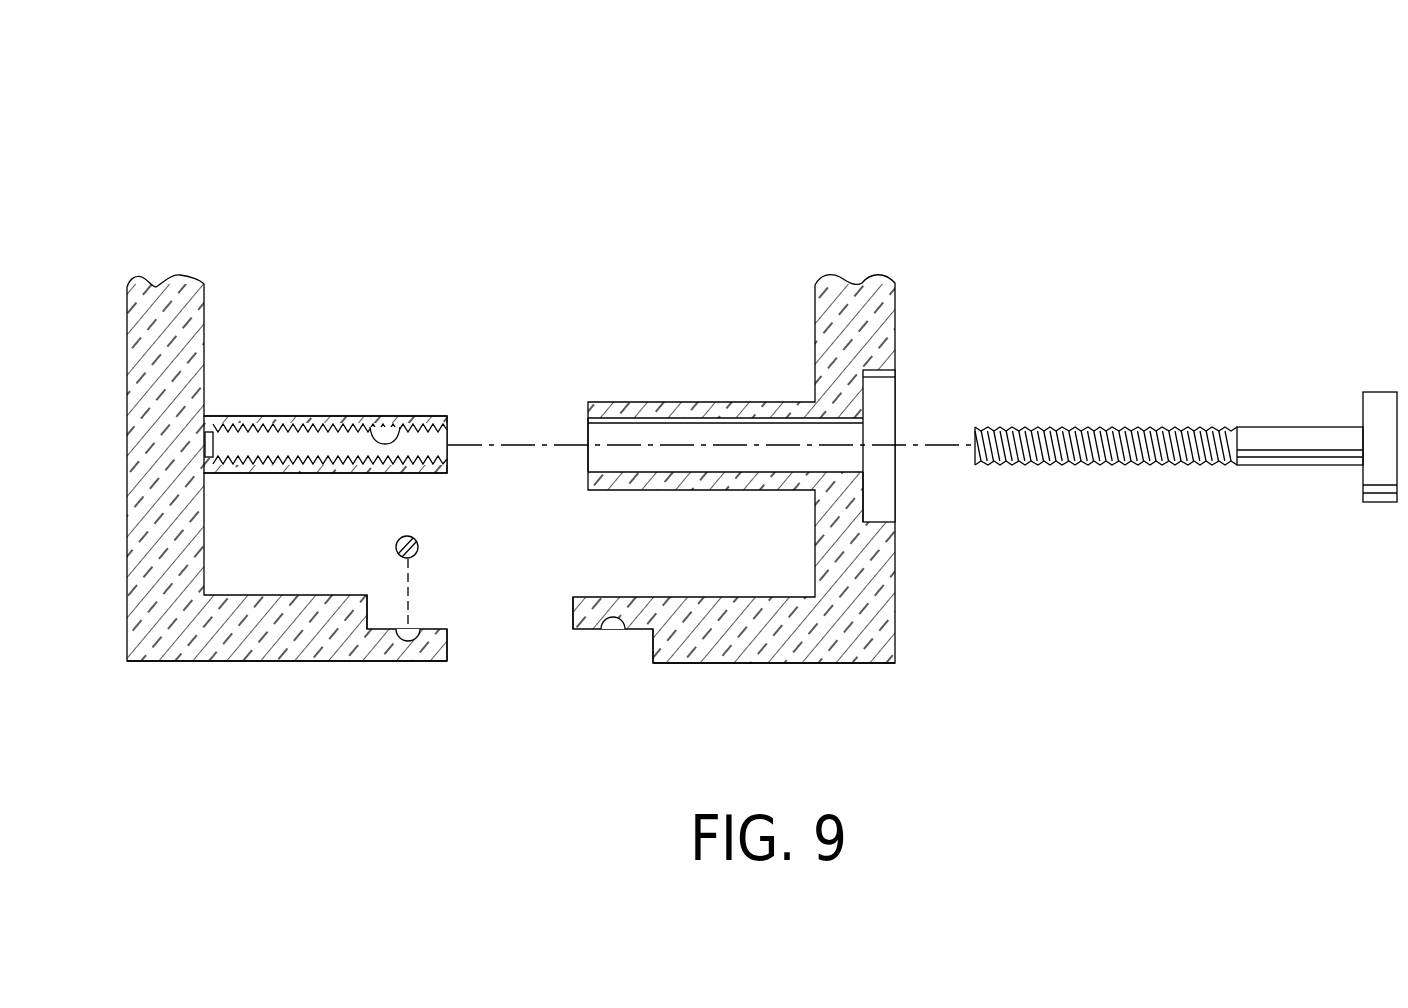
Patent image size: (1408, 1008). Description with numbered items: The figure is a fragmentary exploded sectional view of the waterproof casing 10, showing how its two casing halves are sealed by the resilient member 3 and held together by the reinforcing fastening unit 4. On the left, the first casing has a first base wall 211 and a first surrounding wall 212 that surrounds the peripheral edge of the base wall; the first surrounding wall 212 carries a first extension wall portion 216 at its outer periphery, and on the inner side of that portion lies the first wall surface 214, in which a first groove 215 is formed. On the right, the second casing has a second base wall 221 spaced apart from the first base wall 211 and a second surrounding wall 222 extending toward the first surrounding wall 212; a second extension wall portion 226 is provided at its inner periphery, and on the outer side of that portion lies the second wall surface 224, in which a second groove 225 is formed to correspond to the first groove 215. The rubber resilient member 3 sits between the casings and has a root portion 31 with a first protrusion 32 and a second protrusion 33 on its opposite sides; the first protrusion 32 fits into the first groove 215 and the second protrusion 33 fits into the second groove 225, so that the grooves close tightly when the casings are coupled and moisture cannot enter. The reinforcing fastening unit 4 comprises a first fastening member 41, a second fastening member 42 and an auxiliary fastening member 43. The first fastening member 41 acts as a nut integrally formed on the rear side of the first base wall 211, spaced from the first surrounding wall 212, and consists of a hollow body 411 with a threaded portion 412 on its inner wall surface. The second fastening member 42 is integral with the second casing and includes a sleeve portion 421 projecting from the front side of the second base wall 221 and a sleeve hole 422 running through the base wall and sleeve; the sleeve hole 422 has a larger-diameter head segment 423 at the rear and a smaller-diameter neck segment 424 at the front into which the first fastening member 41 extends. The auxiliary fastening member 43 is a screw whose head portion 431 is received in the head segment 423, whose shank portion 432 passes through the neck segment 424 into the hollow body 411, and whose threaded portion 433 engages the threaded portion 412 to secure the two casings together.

The waterproof casing 10 is at (258, 392).
The reinforcing fastening unit 4 is at (800, 438).
The first fastening member 41 is at (325, 385).
The hollow body 411 is at (258, 417).
The threaded portion 412 is at (399, 418).
The second fastening member 42 is at (750, 505).
The sleeve portion 421 is at (614, 402).
The sleeve hole 422 is at (898, 397).
The head segment 423 is at (885, 482).
The neck segment 424 is at (600, 438).
The auxiliary fastening member 43 is at (1186, 416).
The head portion 431 is at (1378, 400).
The shank portion 432 is at (1265, 449).
The threaded portion 433 is at (1102, 462).
The resilient member 3 is at (407, 555).
The root portion 31 is at (419, 549).
The first protrusion 32 is at (412, 558).
The second protrusion 33 is at (412, 537).
The first base wall 211 is at (127, 480).
The first surrounding wall 212 is at (160, 661).
The first wall surface 214 is at (385, 629).
The first groove 215 is at (405, 641).
The first extension wall portion 216 is at (448, 650).
The second base wall 221 is at (895, 590).
The second surrounding wall 222 is at (818, 663).
The second wall surface 224 is at (640, 632).
The second groove 225 is at (612, 632).
The second extension wall portion 226 is at (573, 611).